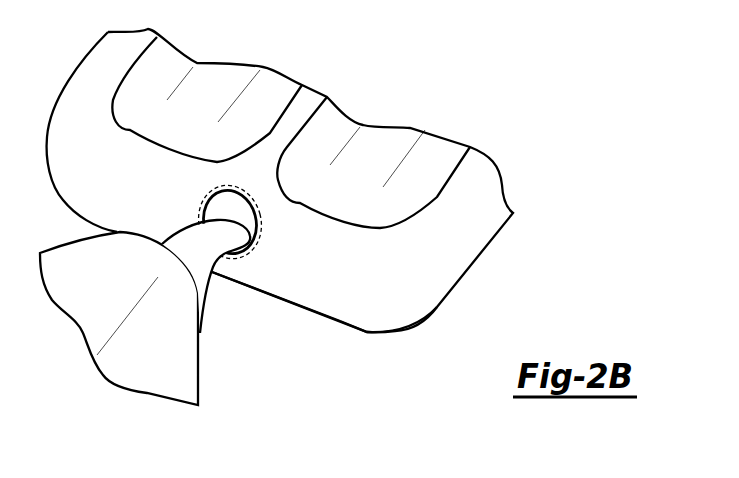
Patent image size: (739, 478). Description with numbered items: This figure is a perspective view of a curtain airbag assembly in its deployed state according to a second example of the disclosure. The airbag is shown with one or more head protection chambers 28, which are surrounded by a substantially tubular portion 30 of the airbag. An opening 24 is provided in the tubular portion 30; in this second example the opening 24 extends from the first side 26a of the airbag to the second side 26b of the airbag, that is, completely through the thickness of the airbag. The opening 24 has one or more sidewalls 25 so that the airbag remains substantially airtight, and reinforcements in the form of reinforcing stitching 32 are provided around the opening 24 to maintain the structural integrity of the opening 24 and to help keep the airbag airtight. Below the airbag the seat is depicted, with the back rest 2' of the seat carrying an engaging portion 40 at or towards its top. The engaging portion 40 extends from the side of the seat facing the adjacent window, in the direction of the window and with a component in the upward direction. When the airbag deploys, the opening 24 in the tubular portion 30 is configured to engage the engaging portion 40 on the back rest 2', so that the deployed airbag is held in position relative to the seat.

The head protection chamber 28 is at (215, 82).
The engaging portion 40 is at (187, 250).
The sidewall 25 is at (259, 232).
The reinforcing stitching 32 is at (259, 251).
The opening 24 is at (230, 255).
The tubular portion 30 is at (313, 293).
The first side 26a is at (383, 313).
The second side 26b is at (407, 330).
The back rest 2' is at (141, 318).